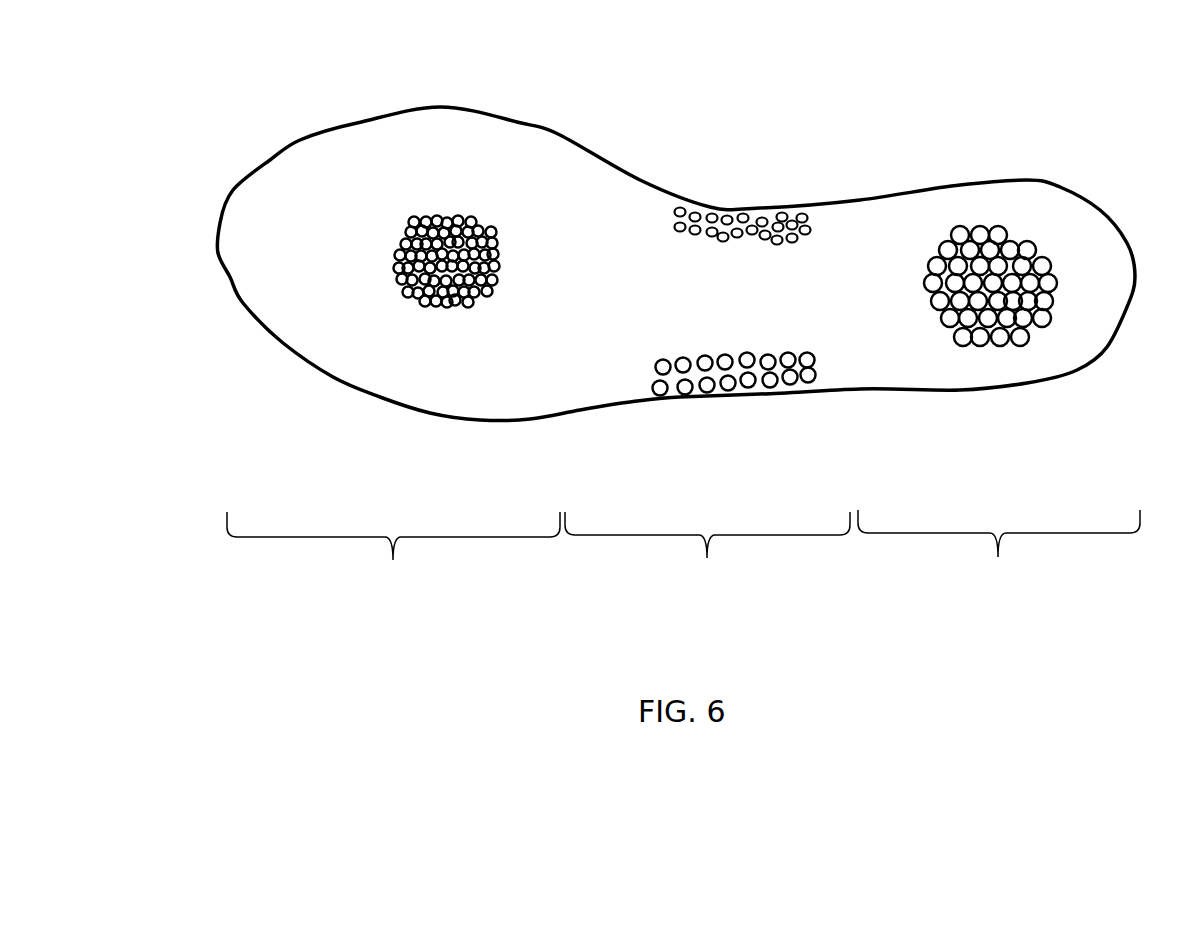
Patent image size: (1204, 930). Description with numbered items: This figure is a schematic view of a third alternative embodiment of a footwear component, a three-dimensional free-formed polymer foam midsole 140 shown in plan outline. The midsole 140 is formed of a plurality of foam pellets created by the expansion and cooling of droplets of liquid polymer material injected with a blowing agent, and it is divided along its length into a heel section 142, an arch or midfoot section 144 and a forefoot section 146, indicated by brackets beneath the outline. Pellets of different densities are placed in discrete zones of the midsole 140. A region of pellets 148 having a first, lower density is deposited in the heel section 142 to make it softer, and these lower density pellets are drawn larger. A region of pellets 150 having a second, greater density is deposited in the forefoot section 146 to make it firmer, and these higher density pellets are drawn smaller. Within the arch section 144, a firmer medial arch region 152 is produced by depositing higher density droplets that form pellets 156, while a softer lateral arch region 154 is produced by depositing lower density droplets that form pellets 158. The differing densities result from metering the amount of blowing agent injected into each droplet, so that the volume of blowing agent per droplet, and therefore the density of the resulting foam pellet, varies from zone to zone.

The midsole 140 is at (275, 138).
The heel section 142 is at (999, 557).
The arch or midfoot section 144 is at (707, 561).
The forefoot section 146 is at (393, 561).
The region of pellets having a first density 148 is at (1045, 337).
The region of pellets having a second density 150 is at (431, 306).
The medial arch region 152 is at (738, 197).
The lateral arch region 154 is at (735, 405).
The pellets 156 is at (708, 208).
The pellets 158 is at (818, 365).